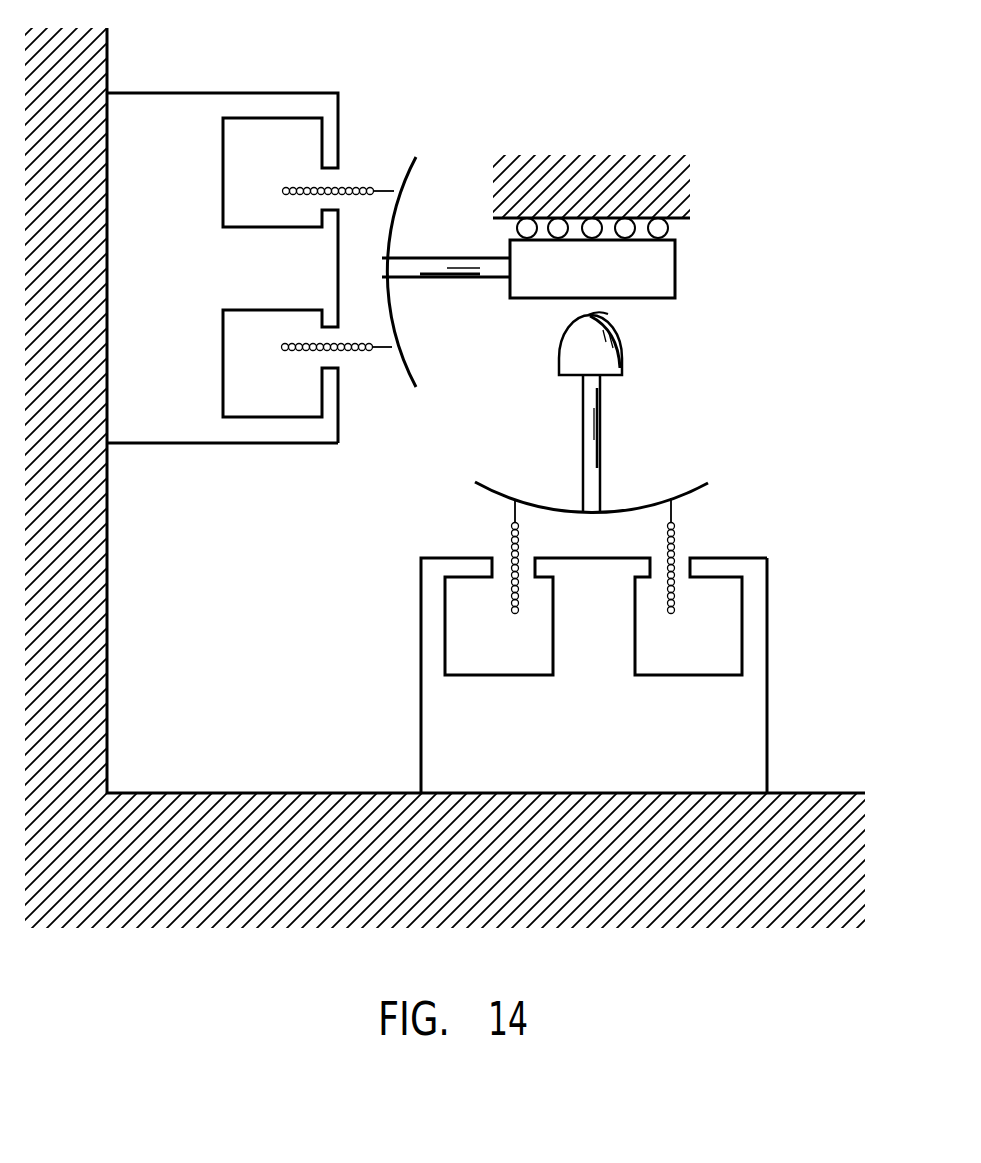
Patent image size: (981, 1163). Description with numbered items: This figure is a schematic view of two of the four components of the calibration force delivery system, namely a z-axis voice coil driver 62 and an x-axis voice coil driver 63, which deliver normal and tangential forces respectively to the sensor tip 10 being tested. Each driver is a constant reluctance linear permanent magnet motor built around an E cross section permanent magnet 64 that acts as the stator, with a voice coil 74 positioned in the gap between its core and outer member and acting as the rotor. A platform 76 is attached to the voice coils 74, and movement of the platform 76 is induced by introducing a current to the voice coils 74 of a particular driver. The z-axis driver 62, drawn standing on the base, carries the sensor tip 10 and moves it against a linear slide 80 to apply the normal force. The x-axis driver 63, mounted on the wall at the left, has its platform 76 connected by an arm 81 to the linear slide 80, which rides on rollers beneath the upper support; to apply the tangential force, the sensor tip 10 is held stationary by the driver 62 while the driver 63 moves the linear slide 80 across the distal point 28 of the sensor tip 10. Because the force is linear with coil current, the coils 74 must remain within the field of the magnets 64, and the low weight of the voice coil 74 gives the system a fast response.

The sensor tip 10 is at (624, 363).
The distal point 28 is at (595, 308).
The z-axis voice coil driver 62 is at (412, 648).
The x-axis voice coil driver 63 is at (242, 449).
The permanent magnet 64 is at (255, 92).
The voice coil 74 is at (352, 186).
The platform 76 is at (397, 338).
The linear slide 80 is at (677, 278).
The arm 81 is at (430, 258).